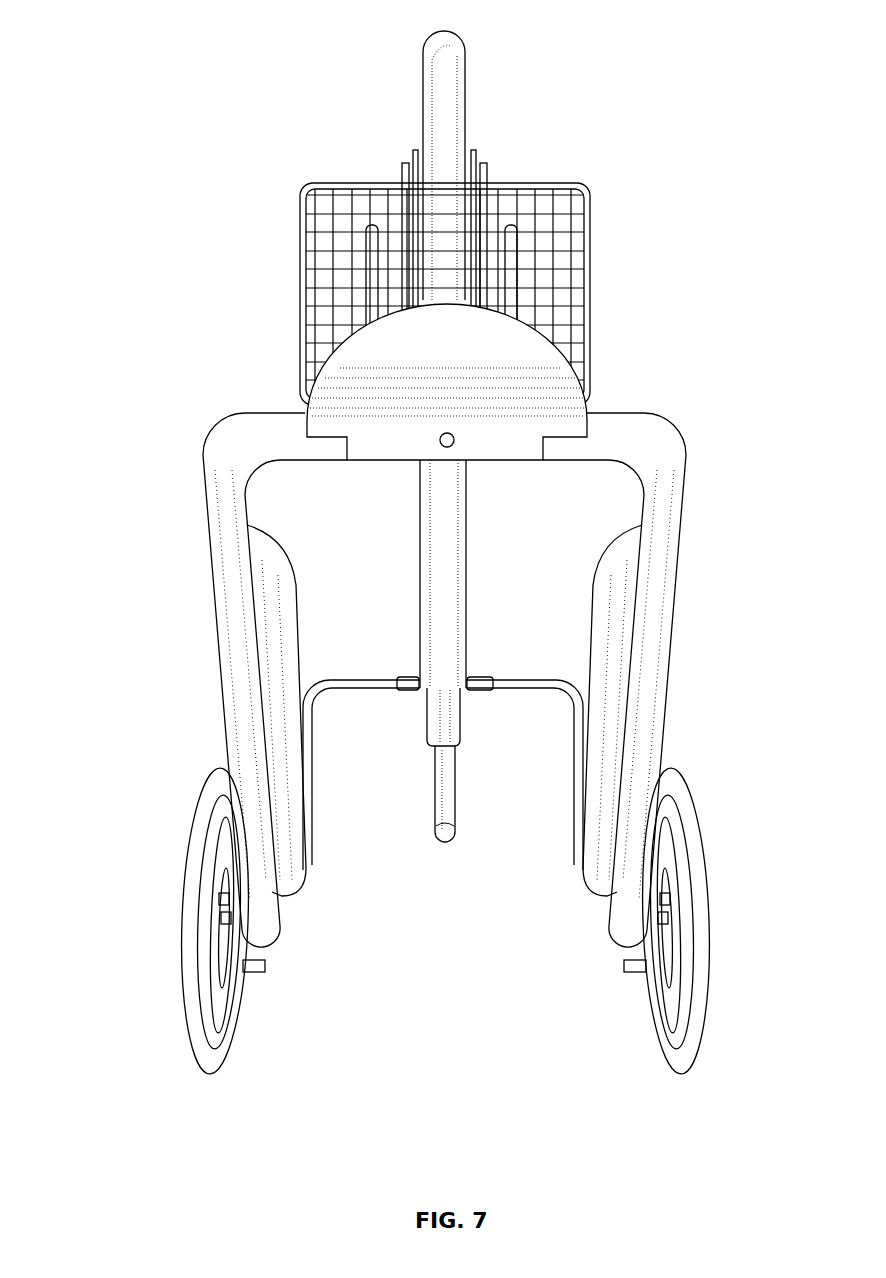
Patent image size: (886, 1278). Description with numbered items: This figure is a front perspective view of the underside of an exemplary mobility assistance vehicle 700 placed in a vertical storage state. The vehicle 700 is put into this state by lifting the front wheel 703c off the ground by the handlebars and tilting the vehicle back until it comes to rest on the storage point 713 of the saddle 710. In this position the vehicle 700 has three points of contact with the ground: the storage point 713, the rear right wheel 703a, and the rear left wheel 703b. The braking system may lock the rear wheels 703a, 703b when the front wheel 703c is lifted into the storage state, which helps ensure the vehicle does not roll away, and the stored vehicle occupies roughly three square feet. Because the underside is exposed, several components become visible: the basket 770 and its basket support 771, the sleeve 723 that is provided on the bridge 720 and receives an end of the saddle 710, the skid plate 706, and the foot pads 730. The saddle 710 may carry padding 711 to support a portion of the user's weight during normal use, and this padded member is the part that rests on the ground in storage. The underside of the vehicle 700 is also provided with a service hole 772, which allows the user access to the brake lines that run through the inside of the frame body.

The mobility assistance vehicle 700 is at (139, 137).
The rear right wheel 703a is at (183, 960).
The rear left wheel 703b is at (712, 930).
The front wheel 703c is at (462, 40).
The skid plate 706 is at (300, 415).
The saddle 710 is at (453, 832).
The central column 711 is at (458, 528).
The storage point 713 is at (445, 876).
The bridge 720 is at (370, 697).
The sleeve 723 is at (462, 700).
The foot pads 730 is at (297, 905).
The basket 770 is at (598, 183).
The basket support 771 is at (370, 228).
The service hole 772 is at (452, 447).